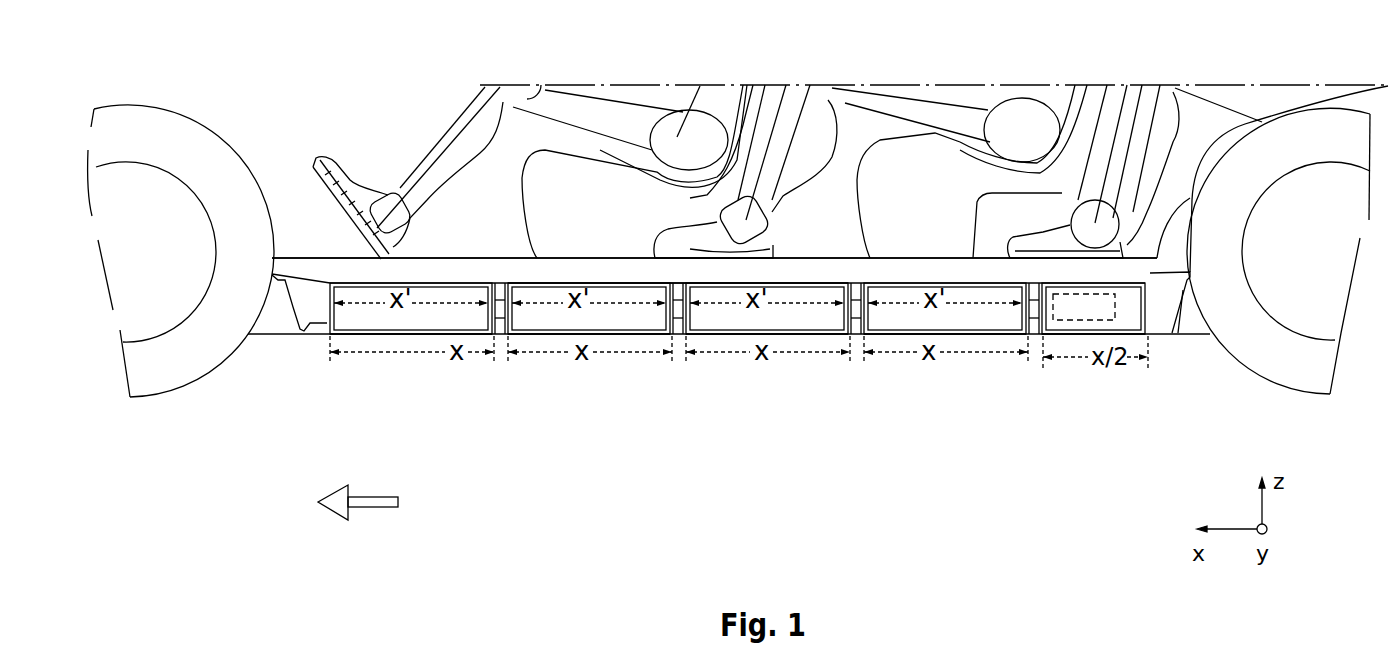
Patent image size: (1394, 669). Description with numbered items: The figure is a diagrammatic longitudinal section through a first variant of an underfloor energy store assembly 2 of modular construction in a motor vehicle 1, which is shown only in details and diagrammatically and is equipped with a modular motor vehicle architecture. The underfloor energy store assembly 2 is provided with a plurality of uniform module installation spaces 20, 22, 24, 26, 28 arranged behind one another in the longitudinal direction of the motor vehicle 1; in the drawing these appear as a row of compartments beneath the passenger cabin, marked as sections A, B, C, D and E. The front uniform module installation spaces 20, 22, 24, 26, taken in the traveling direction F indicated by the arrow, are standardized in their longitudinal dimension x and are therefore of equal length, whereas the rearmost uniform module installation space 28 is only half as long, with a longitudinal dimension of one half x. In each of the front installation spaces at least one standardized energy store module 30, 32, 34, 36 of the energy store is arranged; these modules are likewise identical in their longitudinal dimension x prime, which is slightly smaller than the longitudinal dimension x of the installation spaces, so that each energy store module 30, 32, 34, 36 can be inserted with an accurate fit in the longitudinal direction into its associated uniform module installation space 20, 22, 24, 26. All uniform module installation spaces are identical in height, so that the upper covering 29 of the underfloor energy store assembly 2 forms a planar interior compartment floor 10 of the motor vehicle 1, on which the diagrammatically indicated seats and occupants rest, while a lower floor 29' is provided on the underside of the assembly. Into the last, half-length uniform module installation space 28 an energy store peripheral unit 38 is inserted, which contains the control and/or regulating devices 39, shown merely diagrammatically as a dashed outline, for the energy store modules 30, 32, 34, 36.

The motor vehicle 1 is at (1046, 62).
The underfloor energy store assembly 2 is at (741, 407).
The interior compartment floor 10 is at (801, 253).
The uniform module installation space 20 is at (357, 343).
The uniform module installation space 22 is at (603, 343).
The uniform module installation space 24 is at (813, 343).
The uniform module installation space 26 is at (950, 343).
The rearmost uniform module installation space 28 is at (1087, 343).
The upper covering 29 is at (678, 349).
The lower floor 29' is at (664, 355).
The energy store module 30 is at (430, 313).
The energy store module 32 is at (538, 313).
The energy store module 34 is at (725, 313).
The energy store module 36 is at (890, 313).
The energy store peripheral unit 38 is at (1129, 300).
The control and/or regulating devices 39 is at (1060, 313).
The section A is at (446, 388).
The section B is at (560, 388).
The section C is at (770, 388).
The section D is at (977, 388).
The section E is at (1068, 388).
The traveling direction F is at (358, 491).